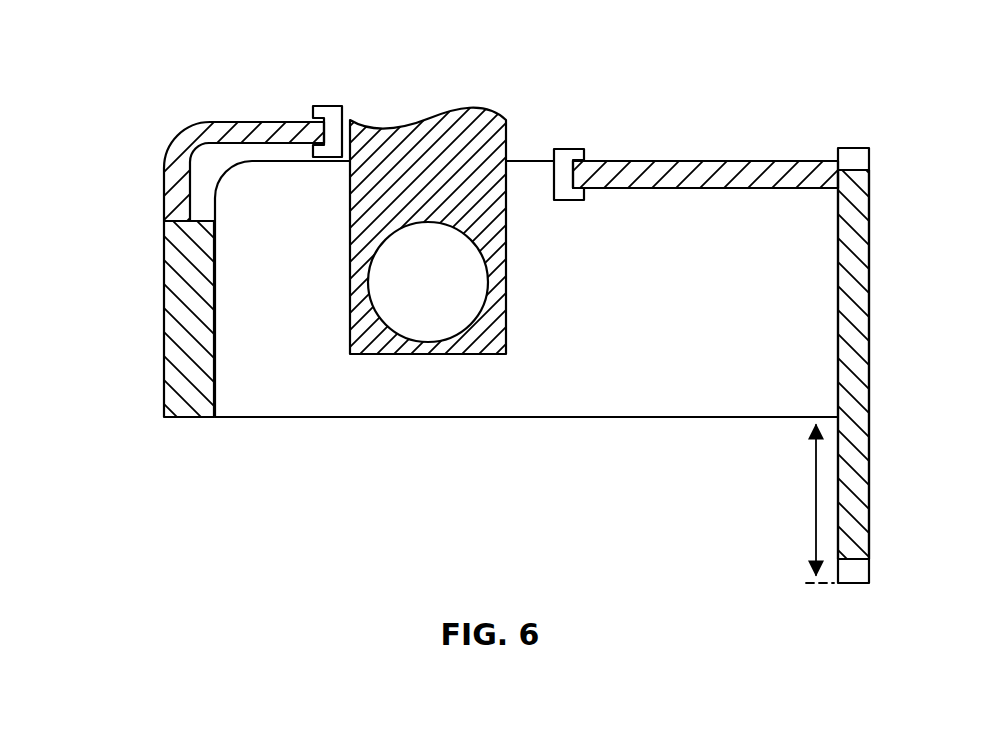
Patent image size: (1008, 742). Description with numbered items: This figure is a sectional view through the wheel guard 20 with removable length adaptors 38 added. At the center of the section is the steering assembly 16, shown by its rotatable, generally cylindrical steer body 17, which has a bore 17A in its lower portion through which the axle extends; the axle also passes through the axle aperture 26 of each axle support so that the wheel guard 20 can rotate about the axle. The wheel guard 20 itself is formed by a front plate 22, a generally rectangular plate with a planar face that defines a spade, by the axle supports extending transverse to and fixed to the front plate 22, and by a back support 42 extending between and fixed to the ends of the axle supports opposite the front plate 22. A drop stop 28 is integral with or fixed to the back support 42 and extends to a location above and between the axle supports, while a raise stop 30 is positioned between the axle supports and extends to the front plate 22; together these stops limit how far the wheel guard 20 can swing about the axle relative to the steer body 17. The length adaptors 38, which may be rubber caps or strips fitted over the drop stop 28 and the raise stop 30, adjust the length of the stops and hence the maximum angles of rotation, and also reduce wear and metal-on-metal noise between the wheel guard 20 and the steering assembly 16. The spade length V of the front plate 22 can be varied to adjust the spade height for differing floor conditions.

The steering assembly 16 is at (467, 240).
The steer body 17 is at (495, 317).
The bore 17A is at (484, 303).
The wheel guard 20 is at (130, 130).
The front plate 22 is at (870, 405).
The axle aperture 26 is at (466, 234).
The drop stop 28 is at (238, 135).
The raise stop 30 is at (705, 172).
The length adaptor 38 is at (336, 118).
The back support 42 is at (172, 335).
The spade length V is at (815, 498).